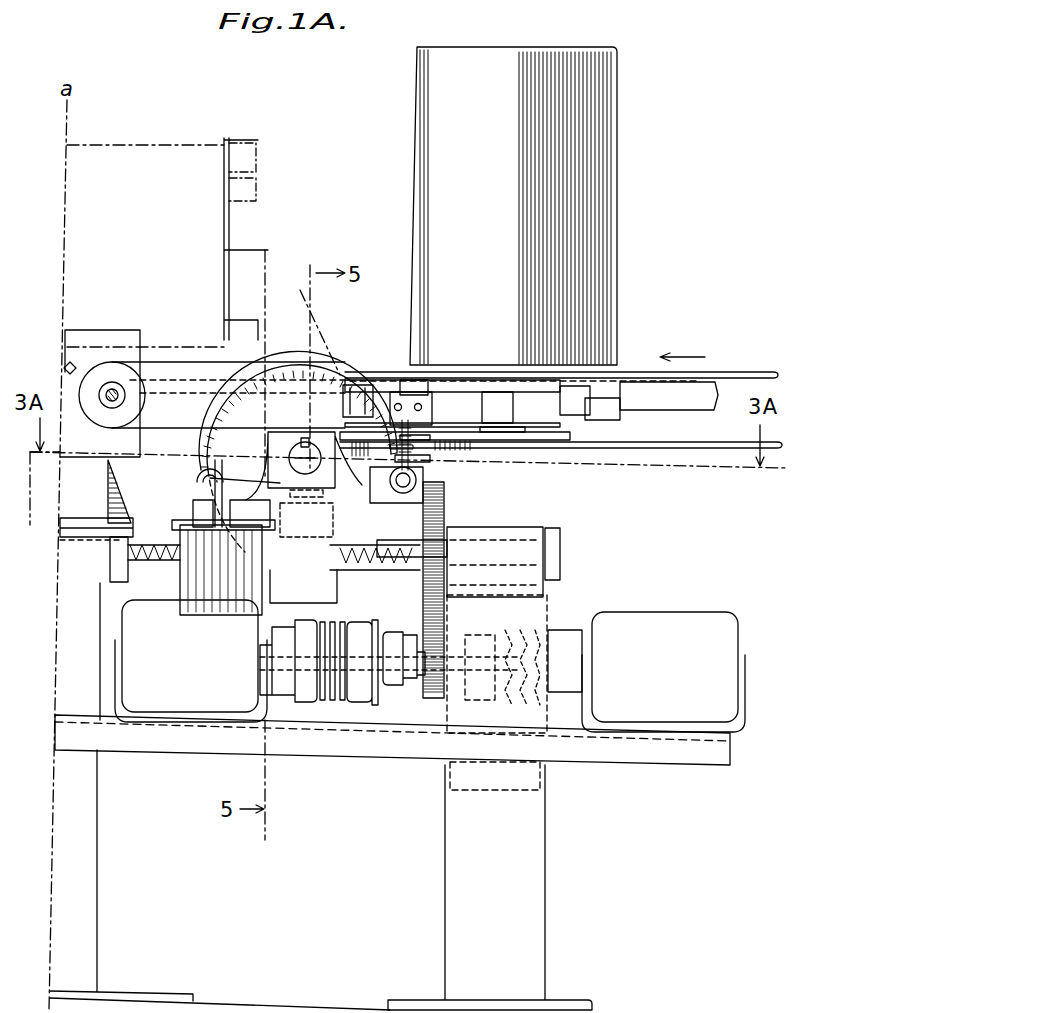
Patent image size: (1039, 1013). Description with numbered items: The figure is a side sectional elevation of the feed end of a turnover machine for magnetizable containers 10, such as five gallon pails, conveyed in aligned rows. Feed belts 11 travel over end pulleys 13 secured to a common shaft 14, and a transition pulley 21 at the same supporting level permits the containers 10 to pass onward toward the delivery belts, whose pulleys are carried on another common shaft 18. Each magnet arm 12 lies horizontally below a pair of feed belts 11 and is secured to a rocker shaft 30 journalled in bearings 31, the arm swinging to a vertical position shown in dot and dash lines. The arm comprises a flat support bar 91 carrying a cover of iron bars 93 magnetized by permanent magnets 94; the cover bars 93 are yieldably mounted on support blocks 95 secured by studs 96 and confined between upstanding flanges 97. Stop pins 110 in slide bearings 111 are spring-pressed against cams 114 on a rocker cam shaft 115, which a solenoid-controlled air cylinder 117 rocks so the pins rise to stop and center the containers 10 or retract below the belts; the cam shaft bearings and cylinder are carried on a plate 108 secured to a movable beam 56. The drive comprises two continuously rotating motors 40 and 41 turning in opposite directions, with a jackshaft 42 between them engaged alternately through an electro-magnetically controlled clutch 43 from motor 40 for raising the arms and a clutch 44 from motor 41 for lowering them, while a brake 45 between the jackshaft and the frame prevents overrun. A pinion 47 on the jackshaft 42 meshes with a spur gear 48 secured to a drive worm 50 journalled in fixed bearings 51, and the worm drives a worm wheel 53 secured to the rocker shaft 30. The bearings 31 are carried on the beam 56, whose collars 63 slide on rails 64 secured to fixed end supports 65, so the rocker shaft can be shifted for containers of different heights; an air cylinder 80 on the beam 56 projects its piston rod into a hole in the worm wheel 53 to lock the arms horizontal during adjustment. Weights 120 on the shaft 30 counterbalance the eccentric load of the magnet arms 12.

The container 10 is at (108, 142).
The feed belt 11 is at (742, 372).
The magnet turnover arm 12 is at (278, 241).
The end pulley 13 is at (130, 360).
The common shaft 14 is at (120, 392).
The common shaft 18 is at (450, 525).
The transition pulley 21 is at (80, 348).
The rocker shaft 30 is at (290, 445).
The bearing 31 is at (227, 444).
The motor 40 is at (735, 628).
The motor 41 is at (165, 715).
The jackshaft 42 is at (395, 695).
The electro-magnetically controlled clutch 43 is at (520, 722).
The electro-magnetically controlled clutch 44 is at (330, 705).
The electro-magnetically controlled brake 45 is at (345, 705).
The pinion 47 is at (440, 700).
The spur gear 48 is at (445, 494).
The drive worm 50 is at (108, 575).
The fixed bearing 51 is at (510, 552).
The worm wheel 53 is at (325, 375).
The movable beam 56 is at (288, 600).
The collar 63 is at (345, 575).
The rail 64 is at (70, 550).
The fixed end support 65 is at (540, 555).
The solenoid-controlled air cylinder 80 is at (252, 552).
The support bar 91 is at (522, 430).
The cover bar 93 is at (618, 372).
The permanent magnet 94 is at (270, 178).
The support block 95 is at (420, 385).
The stud 96 is at (508, 432).
The upstanding flange 97 is at (372, 340).
The plate 108 is at (214, 490).
The stop pin 110 is at (420, 352).
The slide bearing 111 is at (462, 385).
The cam 114 is at (415, 462).
The rocker cam shaft 115 is at (445, 472).
The solenoid-controlled air cylinder 117 is at (195, 516).
The weight 120 is at (191, 661).